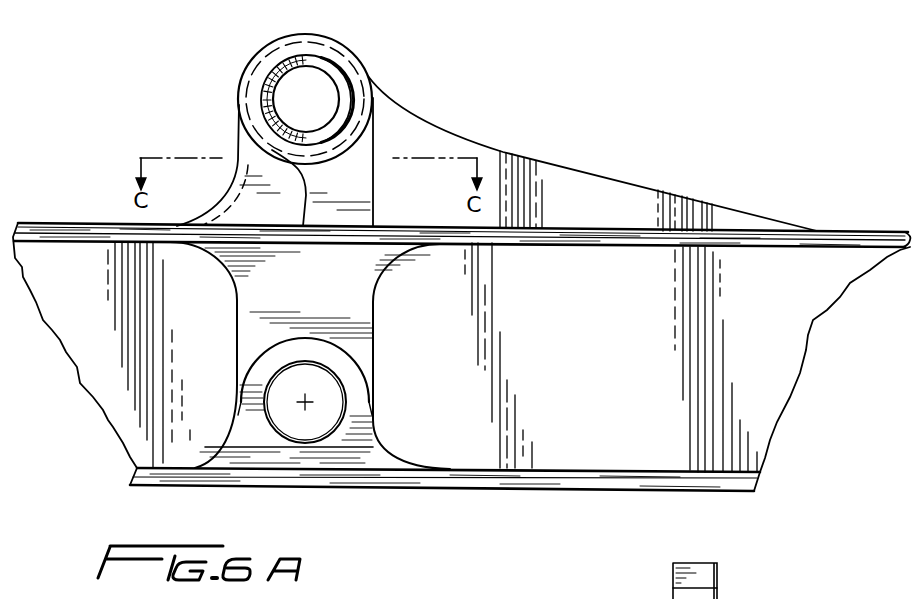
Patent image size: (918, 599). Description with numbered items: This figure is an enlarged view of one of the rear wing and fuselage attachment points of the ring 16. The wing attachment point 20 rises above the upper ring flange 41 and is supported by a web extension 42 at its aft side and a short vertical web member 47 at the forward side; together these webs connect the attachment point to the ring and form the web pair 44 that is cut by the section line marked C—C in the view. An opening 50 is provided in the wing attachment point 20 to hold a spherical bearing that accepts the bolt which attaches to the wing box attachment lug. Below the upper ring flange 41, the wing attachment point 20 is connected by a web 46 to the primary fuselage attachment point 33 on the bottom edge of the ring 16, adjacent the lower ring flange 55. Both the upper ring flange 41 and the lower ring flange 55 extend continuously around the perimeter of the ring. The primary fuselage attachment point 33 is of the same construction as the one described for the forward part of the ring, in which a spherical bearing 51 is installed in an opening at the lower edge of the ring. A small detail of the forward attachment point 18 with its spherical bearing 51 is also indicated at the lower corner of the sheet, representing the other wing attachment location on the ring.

The ring 16 is at (772, 260).
The forward attachment point 18 is at (707, 570).
The wing attachment point 20 is at (357, 50).
The primary fuselage attachment point 33 is at (305, 402).
The upper ring flange 41 is at (688, 236).
The web extension 42 is at (568, 178).
The web pair 44 is at (350, 178).
The web 46 is at (350, 302).
The short vertical web member 47 is at (247, 177).
The opening 50 is at (318, 95).
The spherical bearing 51 is at (733, 598).
The lower ring flange 55 is at (457, 489).